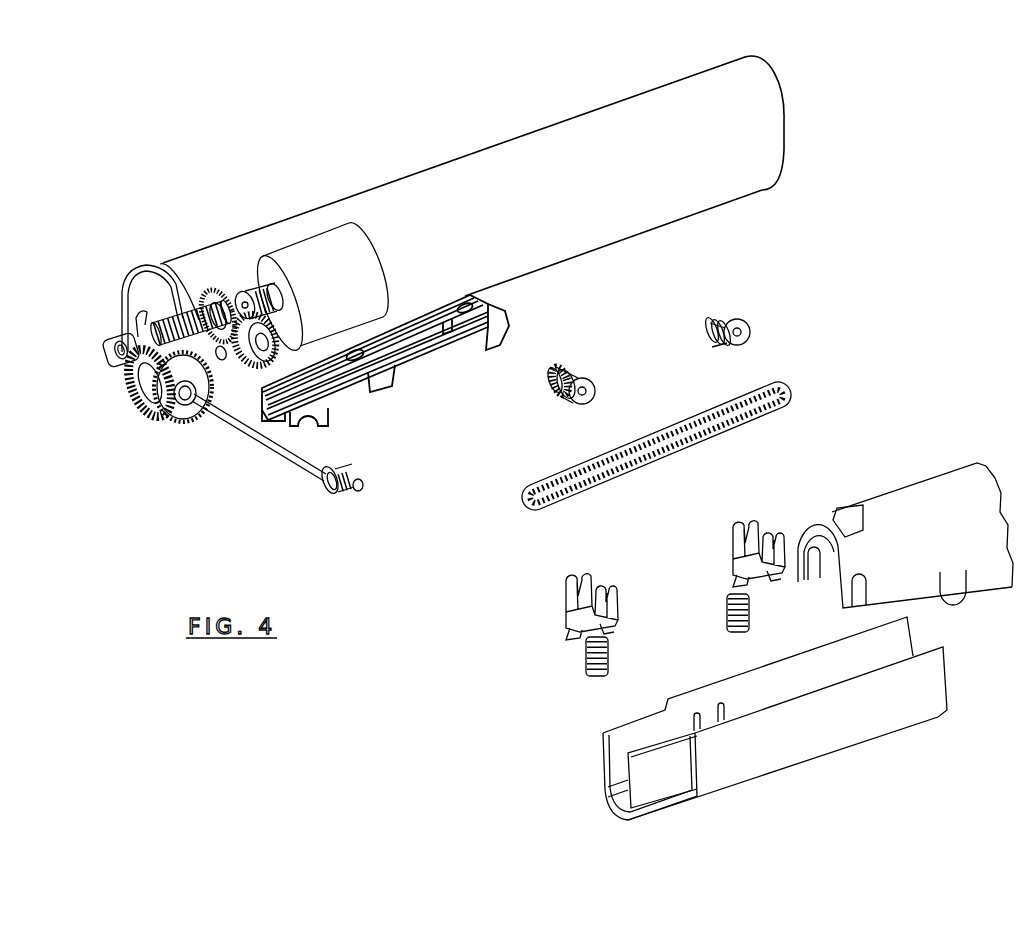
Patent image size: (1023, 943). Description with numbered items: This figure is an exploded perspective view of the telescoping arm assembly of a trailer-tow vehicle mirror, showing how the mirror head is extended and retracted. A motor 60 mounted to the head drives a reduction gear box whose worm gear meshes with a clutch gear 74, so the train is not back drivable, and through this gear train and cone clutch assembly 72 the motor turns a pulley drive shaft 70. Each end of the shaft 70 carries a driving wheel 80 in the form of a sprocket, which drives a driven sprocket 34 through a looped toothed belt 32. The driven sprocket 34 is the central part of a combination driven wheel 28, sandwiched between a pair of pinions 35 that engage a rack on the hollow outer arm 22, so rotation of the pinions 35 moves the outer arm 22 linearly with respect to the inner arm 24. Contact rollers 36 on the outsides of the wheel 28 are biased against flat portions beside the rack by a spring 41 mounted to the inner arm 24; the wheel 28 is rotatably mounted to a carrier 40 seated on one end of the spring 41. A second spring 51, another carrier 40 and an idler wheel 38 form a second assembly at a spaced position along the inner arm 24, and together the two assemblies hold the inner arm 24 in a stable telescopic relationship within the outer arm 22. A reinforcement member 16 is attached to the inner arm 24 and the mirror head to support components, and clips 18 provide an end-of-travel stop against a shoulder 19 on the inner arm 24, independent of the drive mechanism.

The reinforcement member 16 is at (348, 388).
The clips 18 is at (140, 262).
The shoulder 19 is at (695, 790).
The outer arm 22 is at (331, 200).
The inner arm 24 is at (731, 789).
The combination driven wheel 28 is at (592, 327).
The toothed belt 32 is at (646, 440).
The driven sprocket 34 is at (582, 334).
The pinion 35 is at (567, 406).
The contact rollers 36 is at (560, 363).
The idler wheel 38 is at (735, 313).
The carrier 40 is at (612, 585).
The spring 41 is at (585, 673).
The second spring 51 is at (733, 651).
The motor 60 is at (302, 250).
The pulley drive shaft 70 is at (240, 434).
The cone clutch assembly 72 is at (127, 393).
The clutch gear 74 is at (152, 417).
The driving wheel 80 is at (338, 494).